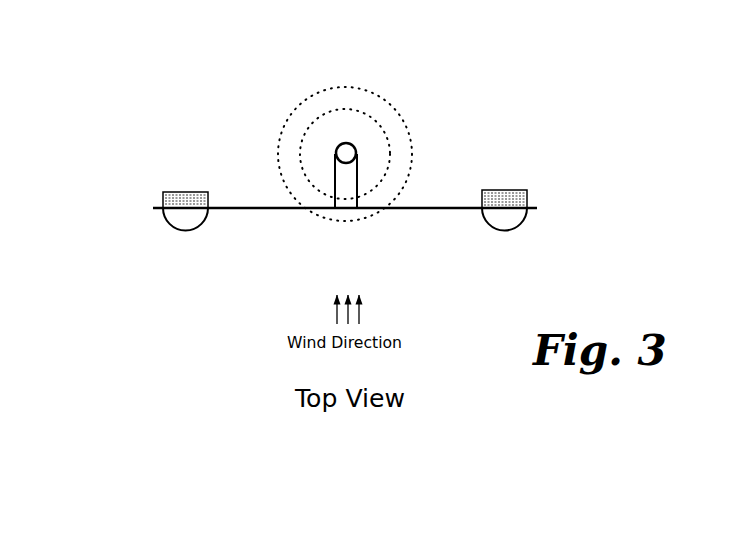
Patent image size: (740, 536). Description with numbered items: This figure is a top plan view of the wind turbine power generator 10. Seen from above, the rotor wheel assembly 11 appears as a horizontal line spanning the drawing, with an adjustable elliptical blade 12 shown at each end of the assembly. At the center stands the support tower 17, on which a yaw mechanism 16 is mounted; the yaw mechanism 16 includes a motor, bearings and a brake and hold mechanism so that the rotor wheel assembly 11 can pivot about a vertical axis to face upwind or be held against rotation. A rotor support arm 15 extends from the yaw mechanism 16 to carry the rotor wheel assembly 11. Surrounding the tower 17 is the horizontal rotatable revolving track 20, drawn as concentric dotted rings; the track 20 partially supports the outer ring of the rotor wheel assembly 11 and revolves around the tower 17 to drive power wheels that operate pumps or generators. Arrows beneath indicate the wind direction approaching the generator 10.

The wind turbine power generator 10 is at (175, 303).
The circular rotor wheel assembly 11 is at (445, 216).
The adjustable elliptical blades 12 is at (157, 192).
The rotor support arms 15 is at (337, 177).
The yaw mechanisms 16 is at (350, 140).
The support tower 17 is at (334, 145).
The horizontal rotatable revolving track 20 is at (407, 118).